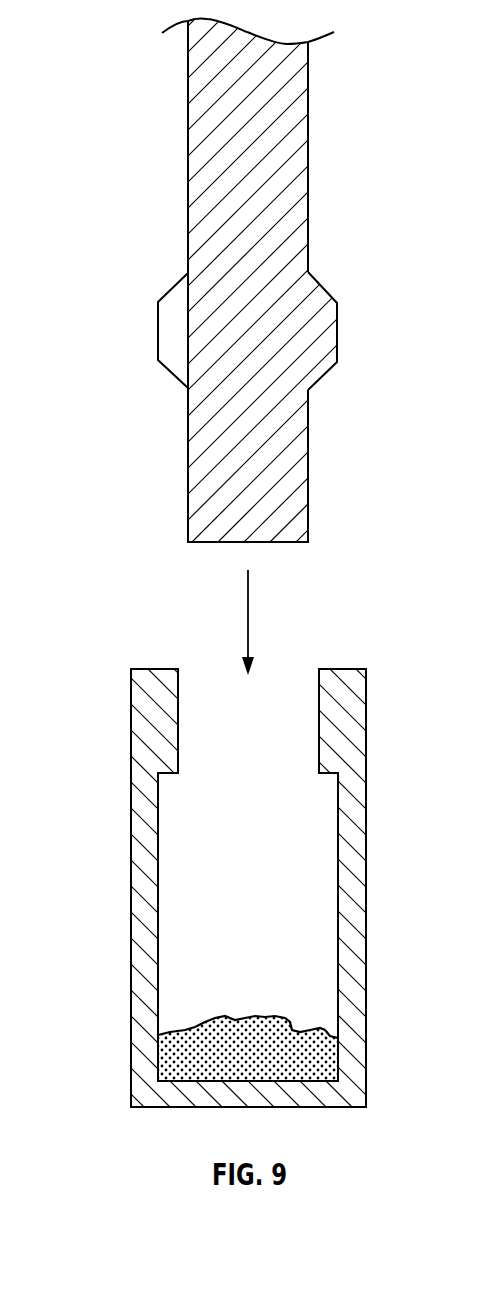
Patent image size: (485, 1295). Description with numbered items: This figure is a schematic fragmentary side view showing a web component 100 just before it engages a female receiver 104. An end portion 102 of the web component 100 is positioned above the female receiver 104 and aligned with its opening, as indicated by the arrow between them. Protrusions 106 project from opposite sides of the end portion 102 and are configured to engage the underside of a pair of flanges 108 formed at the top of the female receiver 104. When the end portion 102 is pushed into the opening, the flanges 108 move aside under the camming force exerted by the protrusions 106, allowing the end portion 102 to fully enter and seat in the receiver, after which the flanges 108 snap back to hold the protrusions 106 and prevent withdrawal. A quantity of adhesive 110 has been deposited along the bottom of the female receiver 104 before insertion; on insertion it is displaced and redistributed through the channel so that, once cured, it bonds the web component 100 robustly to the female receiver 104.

The web component 100 is at (140, 188).
The end portion 102 is at (187, 93).
The female receiver 104 is at (130, 700).
The protrusions 106 is at (158, 332).
The flanges 108 is at (179, 690).
The adhesive 110 is at (272, 1017).